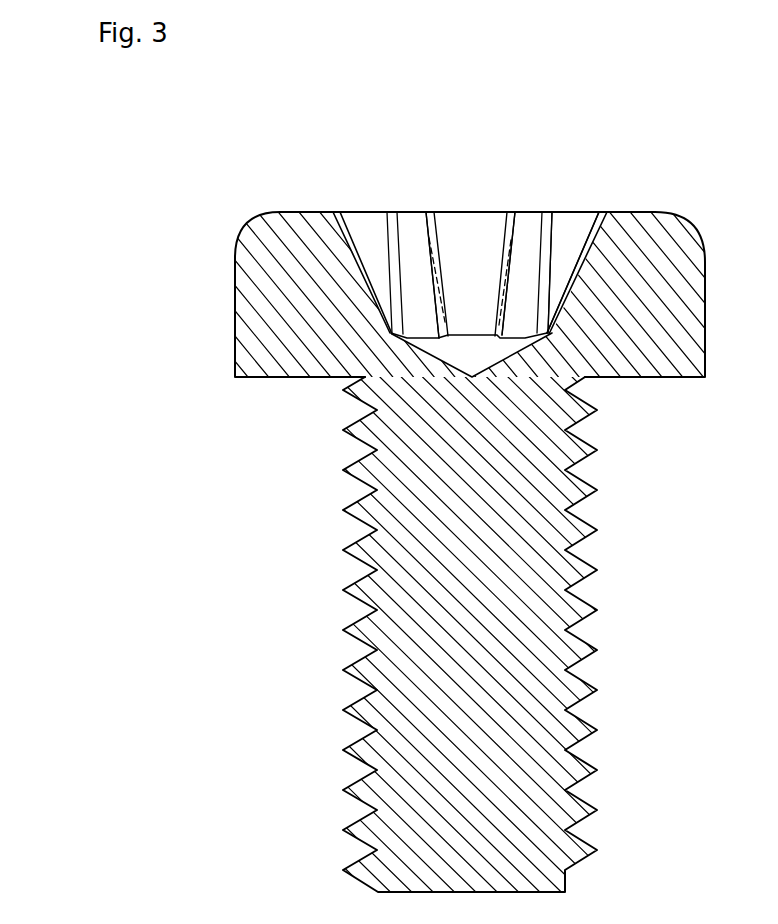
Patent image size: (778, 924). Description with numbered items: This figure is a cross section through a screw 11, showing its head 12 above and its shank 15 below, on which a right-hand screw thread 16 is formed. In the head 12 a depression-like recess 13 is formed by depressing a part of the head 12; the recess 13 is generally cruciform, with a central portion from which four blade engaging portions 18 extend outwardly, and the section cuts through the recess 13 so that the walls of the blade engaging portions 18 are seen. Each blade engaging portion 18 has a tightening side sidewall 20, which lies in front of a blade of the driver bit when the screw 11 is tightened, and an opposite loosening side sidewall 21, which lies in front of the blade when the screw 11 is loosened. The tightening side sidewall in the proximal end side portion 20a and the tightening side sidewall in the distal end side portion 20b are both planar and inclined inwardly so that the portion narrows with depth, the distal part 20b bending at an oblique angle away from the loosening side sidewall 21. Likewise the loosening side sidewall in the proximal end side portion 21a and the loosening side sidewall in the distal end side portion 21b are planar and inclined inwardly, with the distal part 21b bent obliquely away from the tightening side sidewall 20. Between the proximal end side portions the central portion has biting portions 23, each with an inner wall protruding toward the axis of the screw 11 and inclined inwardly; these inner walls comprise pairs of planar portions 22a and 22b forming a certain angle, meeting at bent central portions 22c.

The screw 11 is at (245, 213).
The head 12 is at (692, 235).
The recess 13 is at (570, 256).
The shank 15 is at (523, 497).
The right-hand screw thread 16 is at (597, 610).
The blade engaging portion 18 is at (466, 213).
The tightening side sidewall 20 is at (367, 215).
The tightening side sidewall in proximal end side portion 20a is at (391, 213).
The tightening side sidewall in distal end side portion 20b is at (355, 213).
The loosening side sidewall 21 is at (575, 213).
The loosening side sidewall in proximal end side portion 21a is at (552, 213).
The loosening side sidewall in distal end side portion 21b is at (587, 213).
The planar portion 22a is at (436, 213).
The planar portion 22b is at (413, 213).
The central portion 22c is at (435, 281).
The biting portion 23 is at (433, 267).